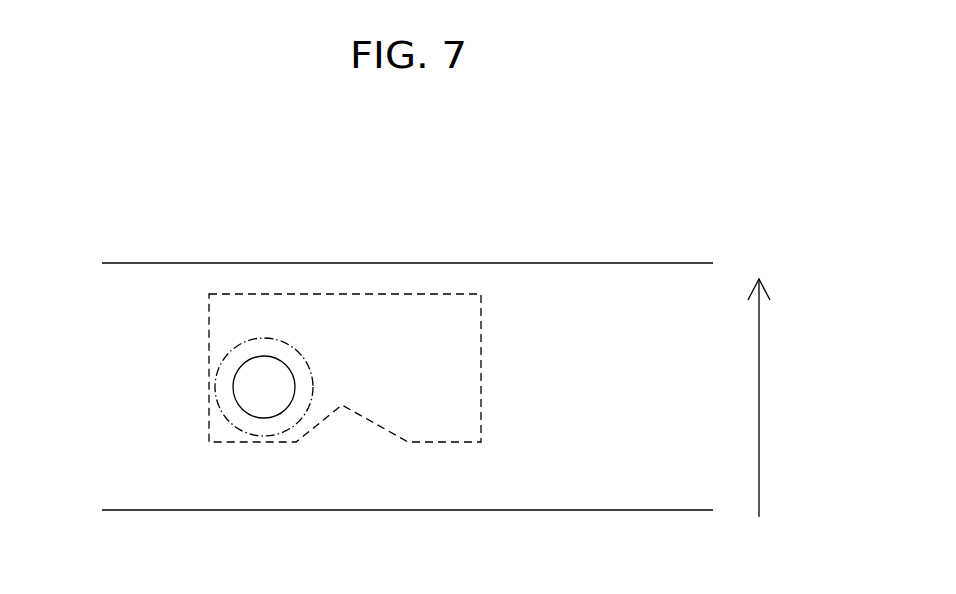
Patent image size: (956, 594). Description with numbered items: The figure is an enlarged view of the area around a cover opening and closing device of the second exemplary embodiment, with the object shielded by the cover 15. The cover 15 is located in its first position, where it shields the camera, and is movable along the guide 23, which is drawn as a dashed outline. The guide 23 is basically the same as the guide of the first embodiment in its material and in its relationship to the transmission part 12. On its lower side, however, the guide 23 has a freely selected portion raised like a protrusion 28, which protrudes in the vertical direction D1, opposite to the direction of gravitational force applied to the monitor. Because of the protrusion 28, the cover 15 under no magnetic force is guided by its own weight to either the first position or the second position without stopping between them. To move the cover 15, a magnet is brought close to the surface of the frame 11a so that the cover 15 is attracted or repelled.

The frame 11a is at (703, 496).
The transmission part 12 is at (238, 406).
The cover 15 is at (228, 353).
The guide 23 is at (481, 356).
The protrusion 28 is at (344, 406).
The vertical direction D1 is at (759, 390).